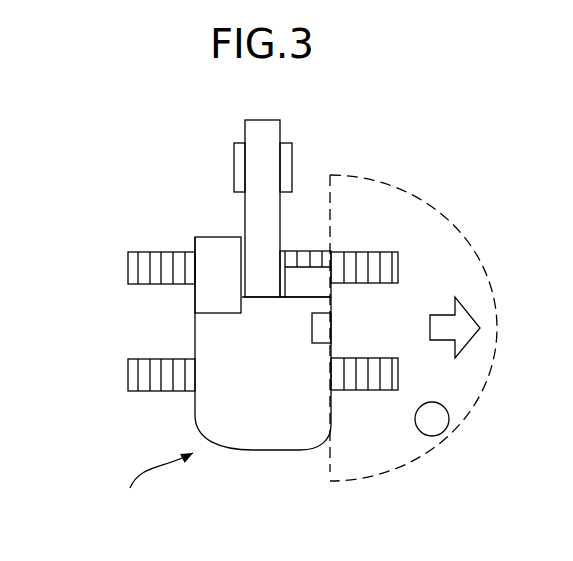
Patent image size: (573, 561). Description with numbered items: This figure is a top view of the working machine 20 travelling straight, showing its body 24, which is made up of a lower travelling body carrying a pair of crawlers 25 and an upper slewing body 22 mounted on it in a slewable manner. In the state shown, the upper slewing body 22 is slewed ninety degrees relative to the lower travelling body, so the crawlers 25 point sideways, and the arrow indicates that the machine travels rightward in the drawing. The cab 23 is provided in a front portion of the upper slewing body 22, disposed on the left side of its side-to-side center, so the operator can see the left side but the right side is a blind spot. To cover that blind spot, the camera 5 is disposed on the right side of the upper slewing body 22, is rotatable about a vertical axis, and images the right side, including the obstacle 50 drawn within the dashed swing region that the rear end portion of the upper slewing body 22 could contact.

The working machine 20 is at (146, 192).
The upper slewing body 22 is at (223, 408).
The cab 23 is at (212, 299).
The body 24 is at (150, 488).
The crawlers 25 is at (370, 252).
The camera 5 is at (323, 330).
The obstacle 50 is at (428, 420).